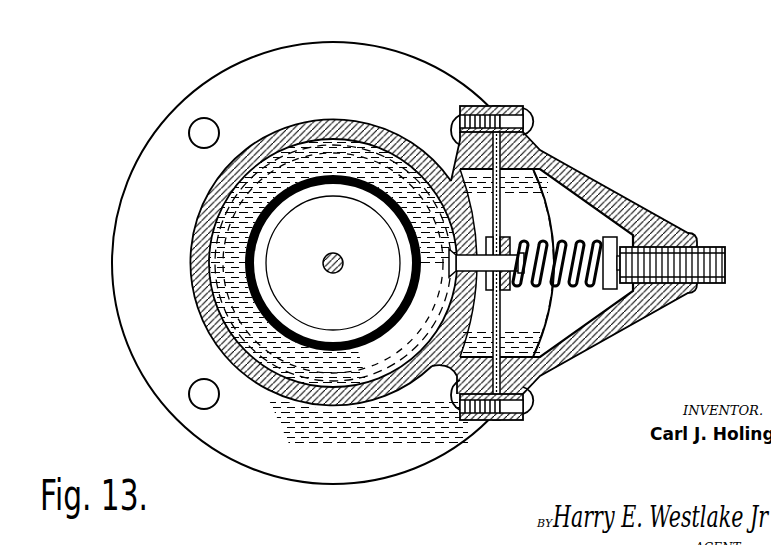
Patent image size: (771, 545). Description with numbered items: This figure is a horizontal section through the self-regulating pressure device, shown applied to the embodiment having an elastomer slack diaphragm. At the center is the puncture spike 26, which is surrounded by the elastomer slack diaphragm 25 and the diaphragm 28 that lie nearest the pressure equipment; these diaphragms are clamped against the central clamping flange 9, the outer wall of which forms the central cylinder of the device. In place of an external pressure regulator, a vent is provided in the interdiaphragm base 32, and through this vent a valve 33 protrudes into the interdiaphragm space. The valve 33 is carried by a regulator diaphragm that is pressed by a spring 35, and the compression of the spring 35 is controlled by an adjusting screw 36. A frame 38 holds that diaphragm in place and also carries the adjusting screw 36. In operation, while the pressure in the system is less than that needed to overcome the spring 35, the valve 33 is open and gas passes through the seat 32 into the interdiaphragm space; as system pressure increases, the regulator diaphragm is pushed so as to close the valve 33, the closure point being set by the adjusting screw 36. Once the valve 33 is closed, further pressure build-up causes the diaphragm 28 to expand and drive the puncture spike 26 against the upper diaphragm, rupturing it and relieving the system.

The central clamping flange 9 is at (213, 347).
The elastomer slack diaphragm 25 is at (253, 238).
The puncture spike 26 is at (331, 257).
The diaphragm 28 is at (247, 275).
The interdiaphragm base vent 32 is at (458, 240).
The valve 33 is at (494, 291).
The spring 35 is at (543, 283).
The adjusting screw 36 is at (710, 247).
The frame 38 is at (623, 332).